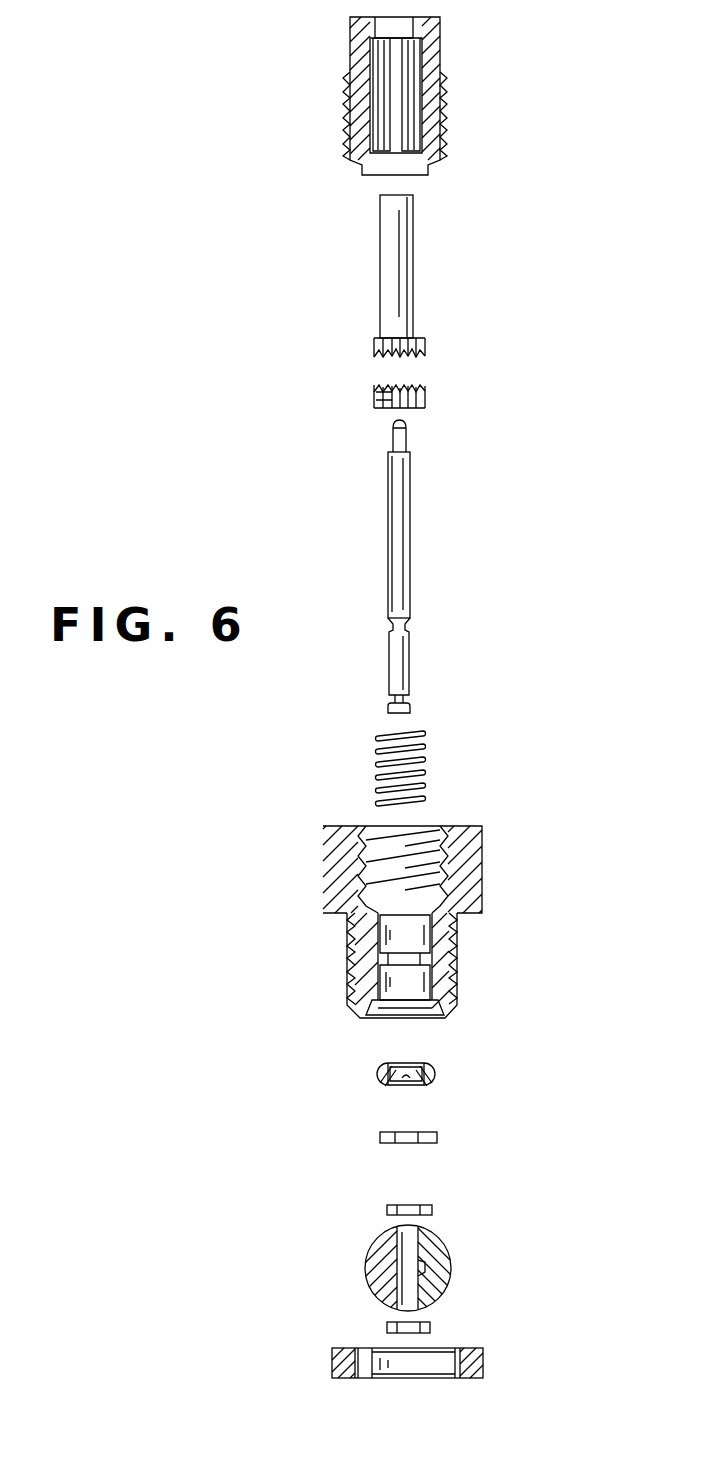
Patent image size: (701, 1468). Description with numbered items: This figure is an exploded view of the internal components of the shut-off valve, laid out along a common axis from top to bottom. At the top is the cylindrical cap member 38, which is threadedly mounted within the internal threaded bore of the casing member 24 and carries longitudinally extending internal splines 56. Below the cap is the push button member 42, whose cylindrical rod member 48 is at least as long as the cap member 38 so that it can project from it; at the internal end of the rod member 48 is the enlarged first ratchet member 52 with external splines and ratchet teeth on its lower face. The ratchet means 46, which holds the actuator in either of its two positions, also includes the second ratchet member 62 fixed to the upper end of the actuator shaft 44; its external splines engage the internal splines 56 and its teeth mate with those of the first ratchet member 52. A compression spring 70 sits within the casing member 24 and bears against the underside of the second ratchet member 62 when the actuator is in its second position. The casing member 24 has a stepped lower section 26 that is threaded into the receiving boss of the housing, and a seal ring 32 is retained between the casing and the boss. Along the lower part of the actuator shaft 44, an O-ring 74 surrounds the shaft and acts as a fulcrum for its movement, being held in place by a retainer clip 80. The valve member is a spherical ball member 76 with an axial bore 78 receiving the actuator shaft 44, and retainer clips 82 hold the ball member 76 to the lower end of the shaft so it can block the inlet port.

The casing member 24 is at (482, 851).
The stepped lower section 26 is at (462, 957).
The seal ring 32 is at (332, 1362).
The cap member 38 is at (440, 97).
The push button member 42 is at (431, 246).
The actuator shaft 44 is at (408, 563).
The ratchet means 46 is at (428, 370).
The cylindrical rod member 48 is at (405, 287).
The first ratchet member 52 is at (374, 348).
The internal splines 56 is at (400, 95).
The second ratchet member 62 is at (374, 400).
The compression spring 70 is at (425, 760).
The O-ring 74 is at (435, 1072).
The spherical ball member 76 is at (450, 1250).
The axial bore 78 is at (418, 1280).
The retainer clip 80 is at (437, 1138).
The retainer clips 82 is at (432, 1208).